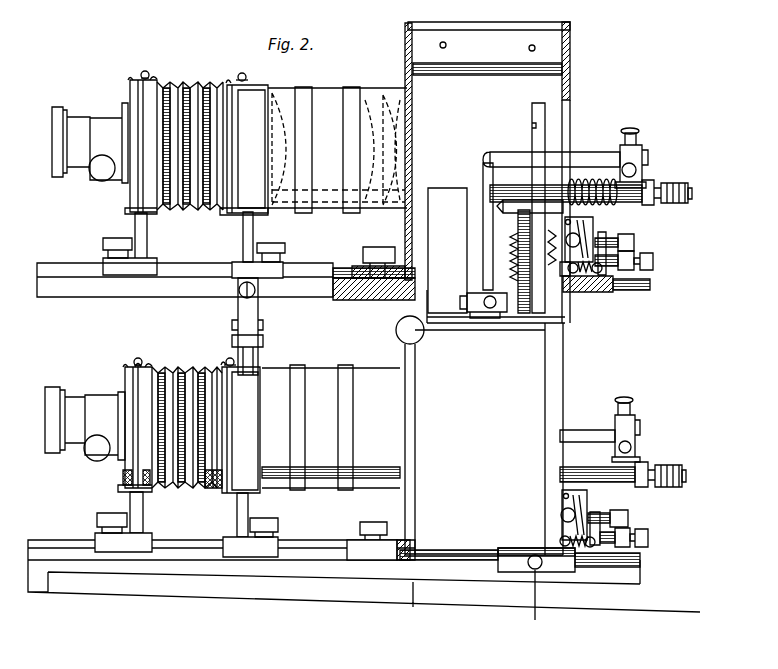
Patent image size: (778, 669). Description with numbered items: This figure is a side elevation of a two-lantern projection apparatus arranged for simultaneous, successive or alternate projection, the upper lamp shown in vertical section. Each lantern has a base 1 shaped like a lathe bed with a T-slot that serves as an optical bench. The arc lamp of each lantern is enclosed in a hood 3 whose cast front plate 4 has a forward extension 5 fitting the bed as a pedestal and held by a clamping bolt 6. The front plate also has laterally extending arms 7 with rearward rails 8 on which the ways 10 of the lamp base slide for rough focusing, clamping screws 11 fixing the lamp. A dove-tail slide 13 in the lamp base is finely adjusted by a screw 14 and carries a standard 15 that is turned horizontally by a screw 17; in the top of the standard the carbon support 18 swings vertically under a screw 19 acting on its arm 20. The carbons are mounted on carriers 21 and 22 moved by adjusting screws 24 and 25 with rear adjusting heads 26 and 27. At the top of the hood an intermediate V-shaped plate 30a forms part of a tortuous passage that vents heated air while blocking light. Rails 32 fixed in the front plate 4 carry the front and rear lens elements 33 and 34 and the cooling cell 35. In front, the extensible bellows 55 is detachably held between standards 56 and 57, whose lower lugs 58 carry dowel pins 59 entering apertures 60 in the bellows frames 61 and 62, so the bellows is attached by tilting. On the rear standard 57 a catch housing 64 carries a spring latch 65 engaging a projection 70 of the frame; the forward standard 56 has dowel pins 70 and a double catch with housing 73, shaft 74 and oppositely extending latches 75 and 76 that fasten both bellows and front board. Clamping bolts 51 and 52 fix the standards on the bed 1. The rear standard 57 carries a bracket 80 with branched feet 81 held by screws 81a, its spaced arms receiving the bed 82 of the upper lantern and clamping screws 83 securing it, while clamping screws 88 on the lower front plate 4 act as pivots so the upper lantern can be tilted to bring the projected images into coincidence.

The base 1 is at (205, 574).
The hood 3 is at (487, 288).
The front plate 4 is at (413, 88).
The forward extension 5 is at (357, 266).
The clamping bolt 6 is at (382, 248).
The laterally extending arms 7 is at (415, 548).
The rails 8 is at (635, 292).
The ways 10 is at (577, 590).
The clamping screws 11 is at (560, 632).
The slide 13 is at (622, 283).
The screw 14 is at (654, 262).
The standard 15 is at (565, 270).
The screw 17 is at (636, 256).
The carbon support 18 is at (548, 248).
The screw 19 is at (634, 240).
The arm 20 is at (594, 228).
The carrier 21 is at (640, 152).
The carrier 22 is at (480, 294).
The adjusting screw 24 is at (585, 184).
The adjusting screw 25 is at (508, 250).
The adjusting head 26 is at (672, 183).
The adjusting head 27 is at (690, 192).
The V-shaped plate 30a is at (487, 58).
The rails 32 is at (355, 212).
The front lens element 33 is at (283, 90).
The rear lens element 34 is at (378, 92).
The water tank or cooling cell 35 is at (328, 86).
The clamping bolt 51 is at (282, 246).
The clamping bolt 52 is at (113, 242).
The extensible bellows 55 is at (190, 80).
The forward standard 56 is at (150, 238).
The rear standard 57 is at (254, 240).
The forwardly-extending lugs 58 is at (222, 214).
The dowel pins 59 is at (218, 482).
The apertures 60 is at (222, 465).
The frame 61 is at (230, 156).
The frame 62 is at (152, 186).
The housing 64 is at (244, 72).
The latch 65 is at (228, 82).
The projection 70 is at (123, 480).
The housing 73 is at (138, 362).
The shaft 74 is at (146, 70).
The latch 75 is at (130, 78).
The latch 76 is at (154, 78).
The bracket 80 is at (245, 309).
The branched feet 81 is at (262, 356).
The screws 81a is at (262, 338).
The bed 82 is at (186, 285).
The clamping screws 83 is at (258, 296).
The clamping screws 88 is at (418, 336).